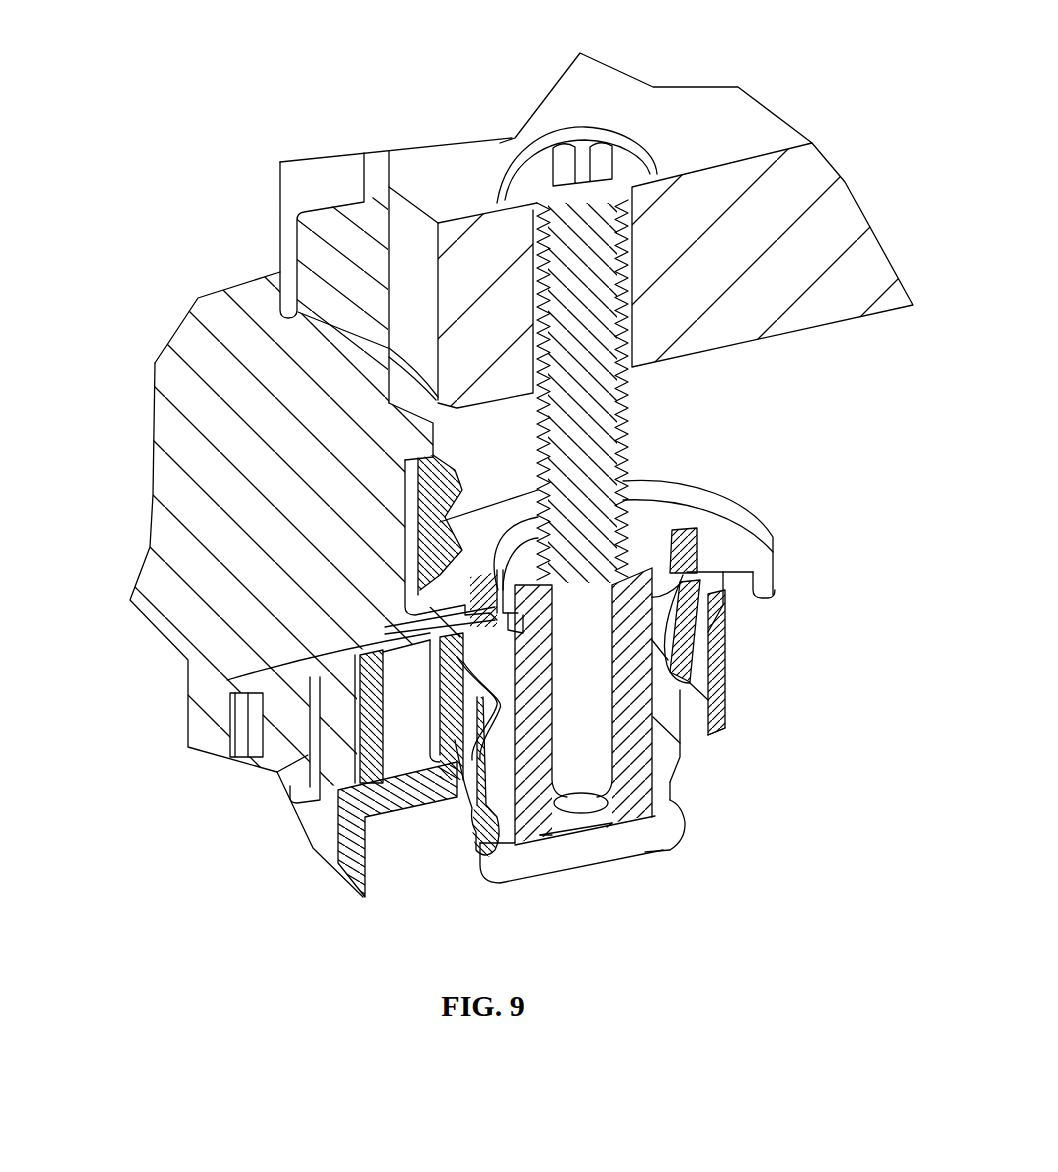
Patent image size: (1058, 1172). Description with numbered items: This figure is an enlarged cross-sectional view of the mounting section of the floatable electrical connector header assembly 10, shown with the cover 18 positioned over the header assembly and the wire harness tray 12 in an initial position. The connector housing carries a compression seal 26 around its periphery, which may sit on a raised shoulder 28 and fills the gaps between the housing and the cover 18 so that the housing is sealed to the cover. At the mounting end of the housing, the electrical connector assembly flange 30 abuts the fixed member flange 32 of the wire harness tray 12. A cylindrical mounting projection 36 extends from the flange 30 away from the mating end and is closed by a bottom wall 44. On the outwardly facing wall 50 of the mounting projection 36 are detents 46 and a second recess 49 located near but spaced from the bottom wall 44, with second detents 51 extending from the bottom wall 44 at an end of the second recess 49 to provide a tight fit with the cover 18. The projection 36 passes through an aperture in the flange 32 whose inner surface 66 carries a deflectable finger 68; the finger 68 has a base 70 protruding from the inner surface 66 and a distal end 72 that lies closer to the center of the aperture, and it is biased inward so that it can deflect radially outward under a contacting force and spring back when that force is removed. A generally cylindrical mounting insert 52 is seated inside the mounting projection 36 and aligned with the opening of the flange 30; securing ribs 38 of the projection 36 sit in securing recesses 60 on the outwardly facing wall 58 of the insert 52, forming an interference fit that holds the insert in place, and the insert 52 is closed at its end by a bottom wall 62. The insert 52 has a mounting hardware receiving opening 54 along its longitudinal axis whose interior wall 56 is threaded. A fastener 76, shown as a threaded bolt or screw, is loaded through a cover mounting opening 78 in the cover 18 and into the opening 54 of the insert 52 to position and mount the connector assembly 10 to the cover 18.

The floatable electrical connector header assembly 10 is at (112, 464).
The wire harness tray 12 is at (308, 856).
The cover 18 is at (855, 140).
The compression seal 26 is at (418, 548).
The raised shoulder 28 is at (407, 437).
The electrical connector assembly flange 30 is at (732, 527).
The fixed member flange 32 is at (728, 698).
The mounting projections 36 is at (667, 638).
The securing ribs 38 is at (705, 553).
The bottom wall 44 is at (652, 857).
The detents 46 is at (703, 663).
The second recess 49 is at (677, 793).
The outwardly facing walls 50 is at (760, 580).
The second detents 51 is at (685, 825).
The mounting inserts 52 is at (470, 700).
The mounting hardware receiving openings 54 is at (607, 827).
The interior walls 56 is at (550, 837).
The outwardly facing walls 58 is at (657, 758).
The securing recesses 60 is at (440, 681).
The bottom wall 62 is at (587, 812).
The inner surface 66 is at (470, 813).
The deflectable finger 68 is at (700, 651).
The base 70 is at (727, 607).
The distal end 72 is at (725, 730).
The fasteners 76 is at (512, 150).
The cover mounting openings 78 is at (657, 177).